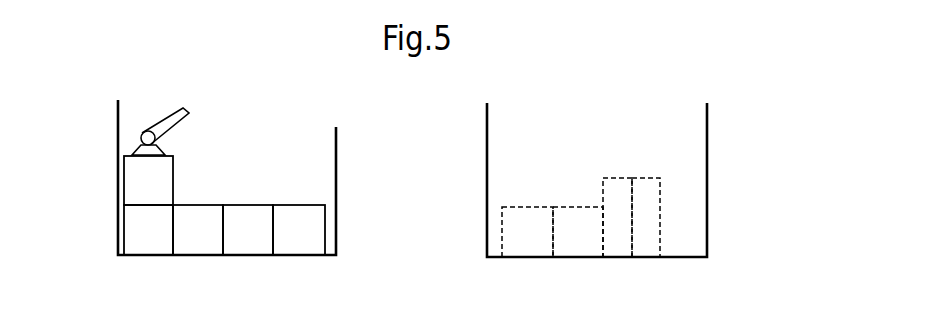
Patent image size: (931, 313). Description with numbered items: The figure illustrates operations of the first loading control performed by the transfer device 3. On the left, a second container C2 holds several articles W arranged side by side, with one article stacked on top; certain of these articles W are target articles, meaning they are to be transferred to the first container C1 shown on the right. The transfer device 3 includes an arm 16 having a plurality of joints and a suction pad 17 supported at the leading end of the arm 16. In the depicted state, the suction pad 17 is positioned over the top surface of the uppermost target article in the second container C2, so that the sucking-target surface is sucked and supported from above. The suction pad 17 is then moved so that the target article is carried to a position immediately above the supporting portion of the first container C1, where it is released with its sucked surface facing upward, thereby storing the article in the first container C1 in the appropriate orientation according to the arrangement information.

The transfer device 3 is at (150, 113).
The arm 16 is at (176, 129).
The suction pad 17 is at (143, 146).
The first container C1 is at (707, 203).
The second container C2 is at (116, 203).
The article W is at (197, 246).